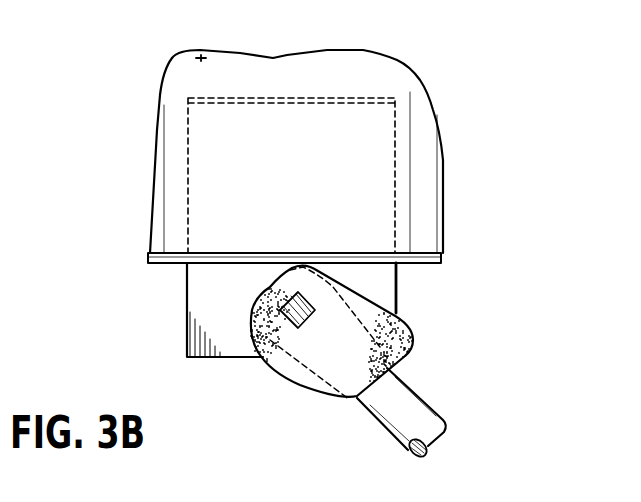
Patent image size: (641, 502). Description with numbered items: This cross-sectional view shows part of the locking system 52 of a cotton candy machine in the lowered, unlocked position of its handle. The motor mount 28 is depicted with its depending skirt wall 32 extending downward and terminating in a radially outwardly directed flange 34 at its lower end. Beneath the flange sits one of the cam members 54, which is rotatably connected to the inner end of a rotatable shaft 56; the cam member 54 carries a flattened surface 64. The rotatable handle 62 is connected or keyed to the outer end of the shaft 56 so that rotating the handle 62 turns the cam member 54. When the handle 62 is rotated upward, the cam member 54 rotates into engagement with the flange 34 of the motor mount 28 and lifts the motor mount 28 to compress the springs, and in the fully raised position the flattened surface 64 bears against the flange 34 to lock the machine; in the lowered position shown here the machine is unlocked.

The motor mount 28 is at (434, 103).
The depending skirt wall 32 is at (200, 56).
The radially outwardly directed flange 34 is at (362, 299).
The locking system 52 is at (443, 302).
The cam member 54 is at (330, 286).
The rotatable shaft 56 is at (286, 296).
The rotatable handle 62 is at (434, 400).
The flattened surface 64 is at (414, 352).